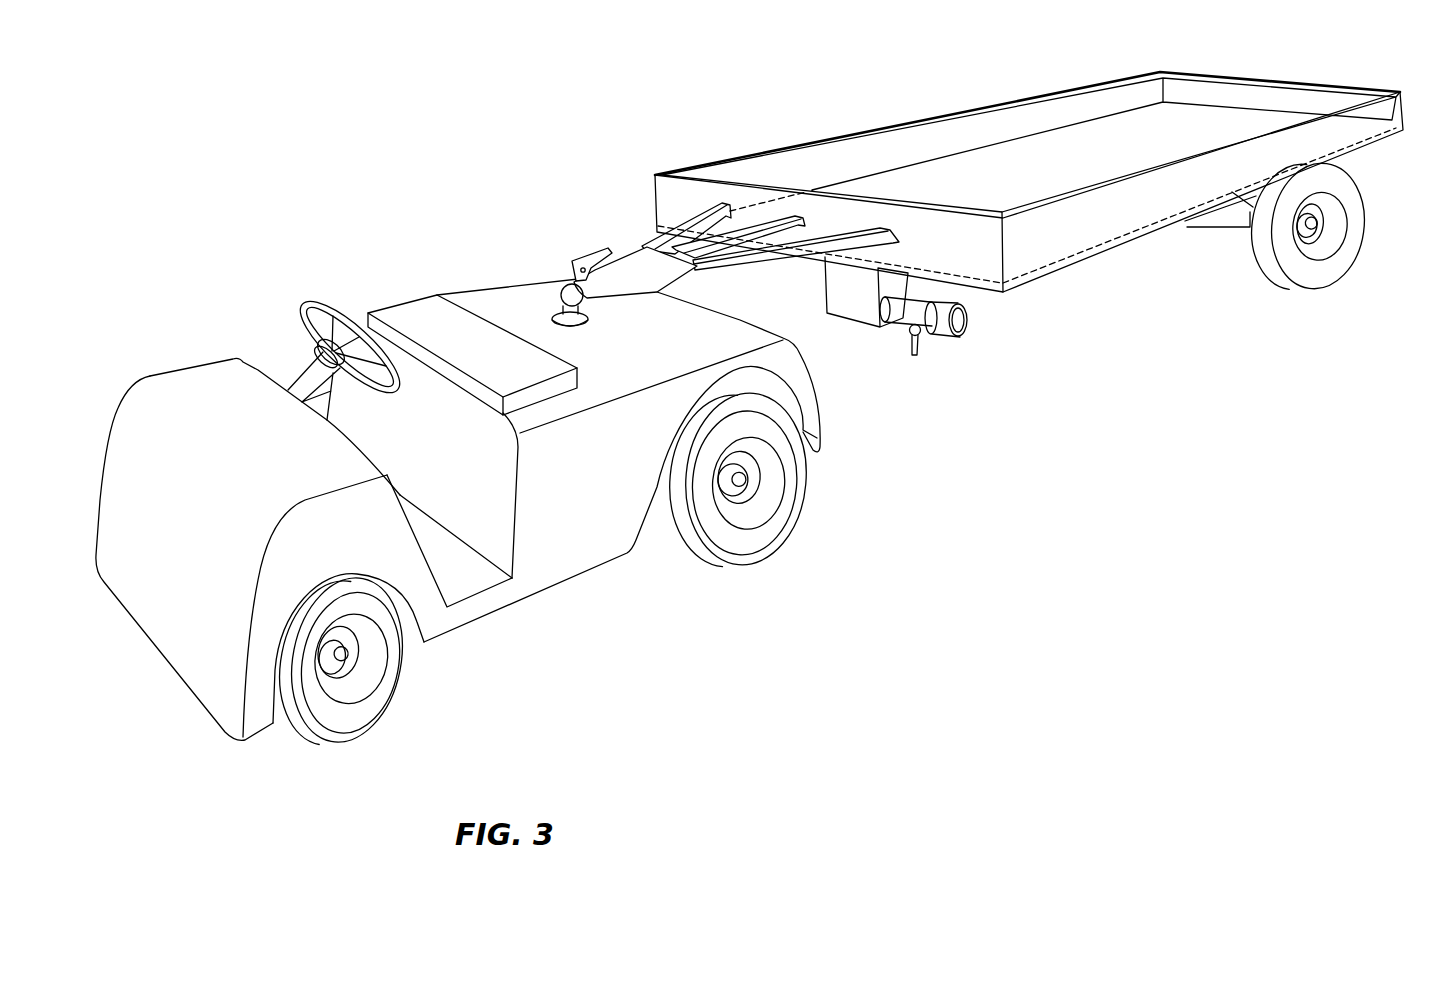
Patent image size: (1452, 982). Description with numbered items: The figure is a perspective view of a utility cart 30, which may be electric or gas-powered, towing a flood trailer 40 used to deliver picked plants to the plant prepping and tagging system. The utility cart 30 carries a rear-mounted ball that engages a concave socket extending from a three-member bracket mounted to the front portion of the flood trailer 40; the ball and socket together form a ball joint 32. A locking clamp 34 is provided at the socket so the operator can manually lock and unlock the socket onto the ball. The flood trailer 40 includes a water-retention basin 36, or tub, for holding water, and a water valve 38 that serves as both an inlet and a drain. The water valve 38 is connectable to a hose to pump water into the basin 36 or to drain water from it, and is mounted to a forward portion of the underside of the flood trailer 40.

The utility cart 30 is at (265, 302).
The ball joint 32 is at (560, 285).
The locking clamp 34 is at (587, 260).
The water-retention basin 36 is at (987, 175).
The water valve 38 is at (958, 320).
The flood trailer 40 is at (1075, 282).